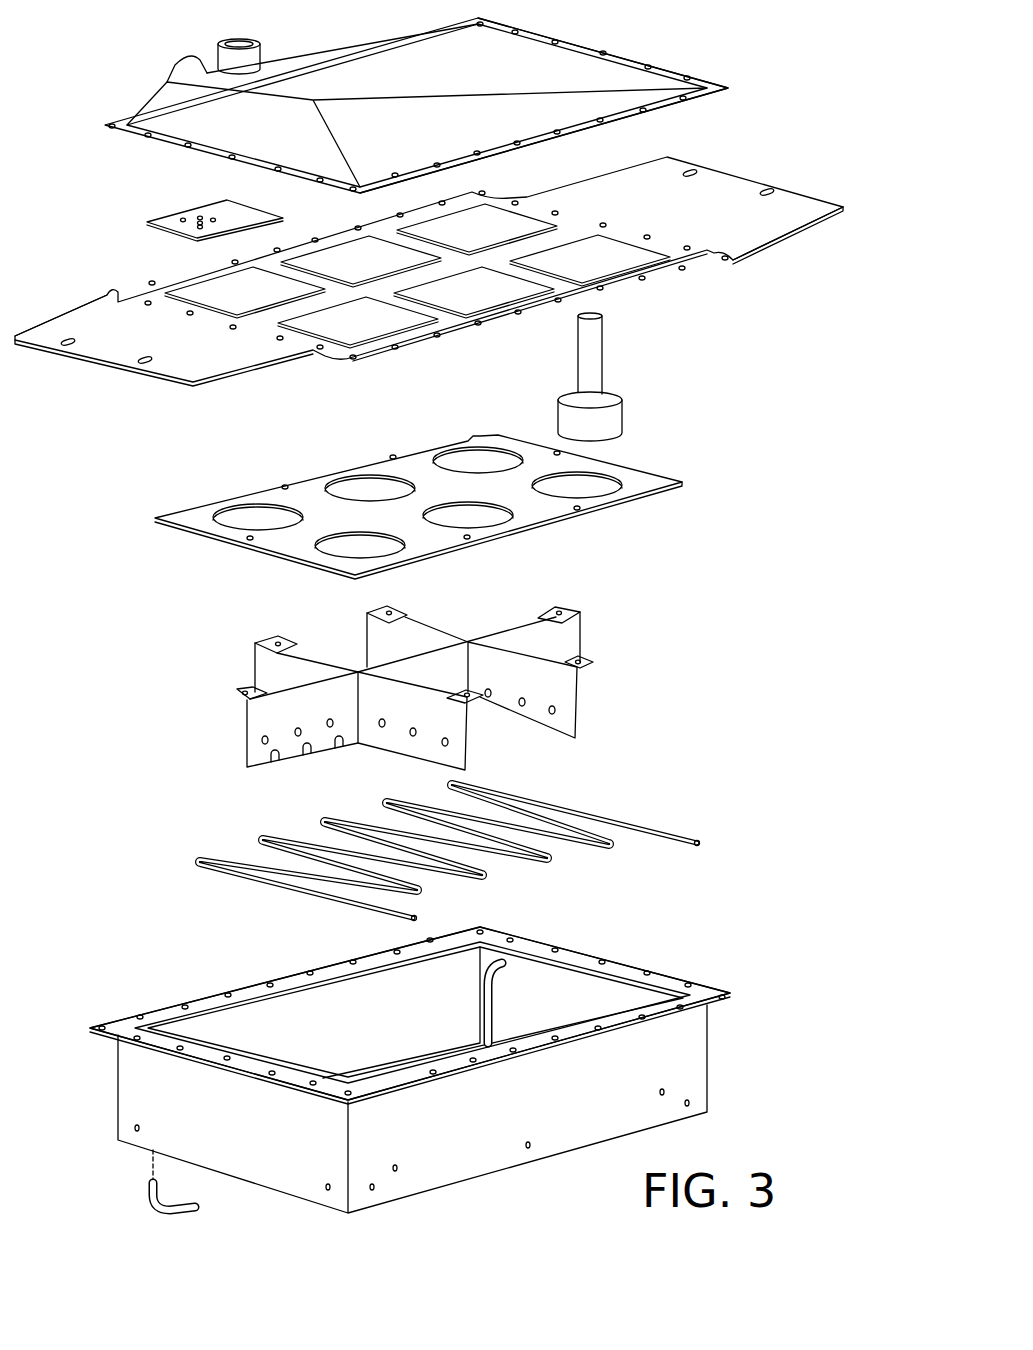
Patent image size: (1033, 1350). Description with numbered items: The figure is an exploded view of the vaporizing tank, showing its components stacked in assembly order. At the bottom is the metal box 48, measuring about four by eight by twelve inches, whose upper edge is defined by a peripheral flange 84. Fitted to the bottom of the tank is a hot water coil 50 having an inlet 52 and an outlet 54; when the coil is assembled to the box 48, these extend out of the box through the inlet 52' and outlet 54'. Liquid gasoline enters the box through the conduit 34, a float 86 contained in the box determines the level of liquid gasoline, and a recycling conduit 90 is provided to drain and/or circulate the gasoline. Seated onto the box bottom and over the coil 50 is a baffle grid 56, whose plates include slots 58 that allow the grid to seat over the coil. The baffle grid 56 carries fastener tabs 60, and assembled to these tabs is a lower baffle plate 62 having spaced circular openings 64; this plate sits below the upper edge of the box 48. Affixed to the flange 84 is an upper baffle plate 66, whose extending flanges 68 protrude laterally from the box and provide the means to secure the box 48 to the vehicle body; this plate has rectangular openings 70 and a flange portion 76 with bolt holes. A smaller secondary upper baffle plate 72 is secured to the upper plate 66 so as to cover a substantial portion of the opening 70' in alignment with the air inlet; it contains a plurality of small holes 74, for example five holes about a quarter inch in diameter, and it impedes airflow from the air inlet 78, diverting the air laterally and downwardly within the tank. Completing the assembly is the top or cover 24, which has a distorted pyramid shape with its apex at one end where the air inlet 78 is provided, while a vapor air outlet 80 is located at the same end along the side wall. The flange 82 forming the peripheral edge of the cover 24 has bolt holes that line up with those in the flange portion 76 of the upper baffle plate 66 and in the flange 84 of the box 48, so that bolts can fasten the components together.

The top or cover 24 is at (510, 68).
The conduit 34 is at (490, 1000).
The metal box 48 is at (444, 1065).
The hot water coil 50 is at (463, 847).
The inlet 52 is at (342, 922).
The outlet 54 is at (710, 801).
The inlet 52' is at (474, 1176).
The outlet 54' is at (725, 1078).
The baffle grid 56 is at (403, 699).
The slots 58 is at (337, 743).
The fastener tabs 60 is at (400, 608).
The lower baffle plate 62 is at (434, 505).
The circular openings 64 is at (375, 543).
The upper baffle plate 66 is at (429, 288).
The extending flanges 68 is at (213, 360).
The rectangular openings 70 is at (358, 351).
The opening 70' is at (200, 278).
The secondary upper baffle plate 72 is at (225, 212).
The holes 74 is at (182, 218).
The flange portion 76 is at (655, 268).
The air inlet 78 is at (233, 43).
The vapor air outlet 80 is at (173, 65).
The flange 82 is at (663, 70).
The flange 84 is at (665, 980).
The float 86 is at (613, 418).
The recycling conduit 90 is at (150, 1207).